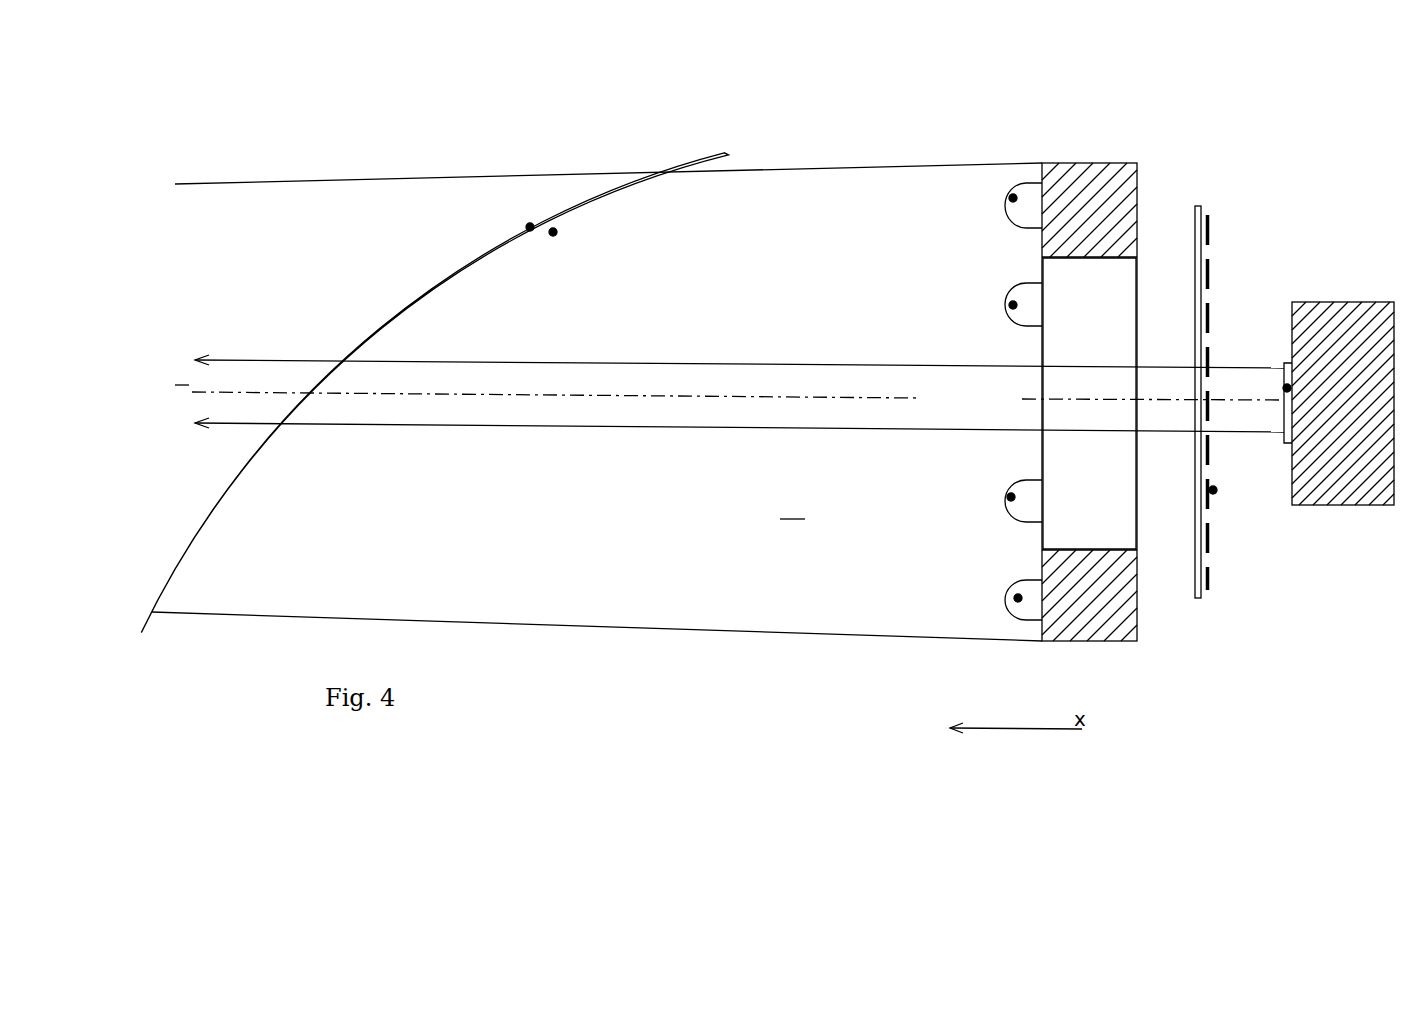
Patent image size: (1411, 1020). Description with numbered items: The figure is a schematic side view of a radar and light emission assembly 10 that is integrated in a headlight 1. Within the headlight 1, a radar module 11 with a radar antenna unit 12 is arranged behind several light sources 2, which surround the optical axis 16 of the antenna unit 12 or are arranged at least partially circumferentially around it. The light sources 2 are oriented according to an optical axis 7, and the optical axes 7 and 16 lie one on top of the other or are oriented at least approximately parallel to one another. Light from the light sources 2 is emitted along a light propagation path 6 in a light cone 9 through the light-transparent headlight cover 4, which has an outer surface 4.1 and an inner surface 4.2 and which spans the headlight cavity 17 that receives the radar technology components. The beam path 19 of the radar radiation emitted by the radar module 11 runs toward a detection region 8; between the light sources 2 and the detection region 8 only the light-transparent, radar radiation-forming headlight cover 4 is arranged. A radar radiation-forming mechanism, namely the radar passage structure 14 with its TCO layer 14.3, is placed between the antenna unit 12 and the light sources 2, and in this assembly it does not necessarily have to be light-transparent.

The headlight 1 is at (1045, 113).
The light source 2 is at (1010, 303).
The headlight cover 4 is at (405, 318).
The outer surface 4.1 is at (530, 224).
The inner surface 4.2 is at (556, 232).
The light propagation path 6 is at (790, 362).
The optical axis 7 is at (637, 388).
The detection region 8 is at (182, 374).
The light cone 9 is at (890, 153).
The radar and light emission assembly 10 is at (1152, 130).
The radar module 11 is at (1371, 505).
The radar antenna unit 12 is at (1285, 386).
The radar passage structure 14 is at (1197, 605).
The TCO layer 14.3 is at (1213, 493).
The optical axis of the radar module 16 is at (1117, 398).
The headlight cavity 17 is at (792, 508).
The beam path 19 is at (517, 430).